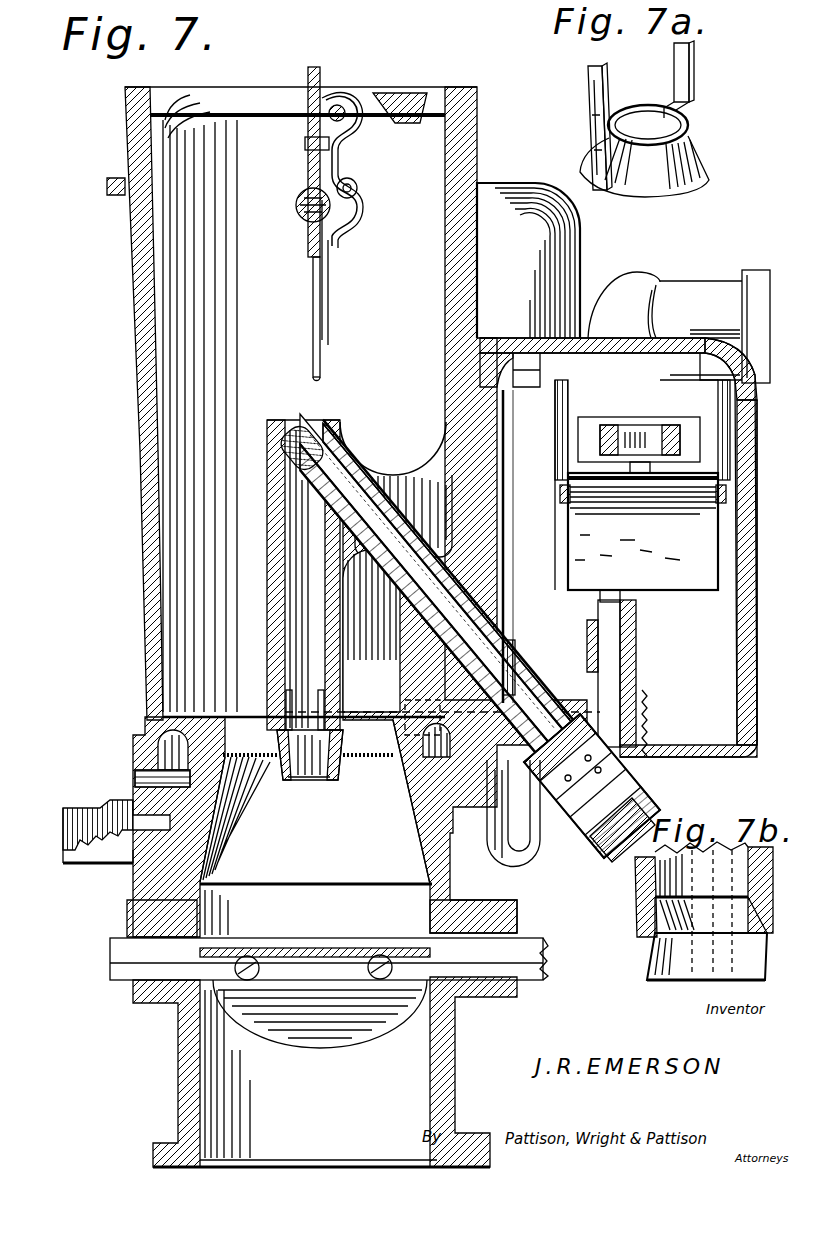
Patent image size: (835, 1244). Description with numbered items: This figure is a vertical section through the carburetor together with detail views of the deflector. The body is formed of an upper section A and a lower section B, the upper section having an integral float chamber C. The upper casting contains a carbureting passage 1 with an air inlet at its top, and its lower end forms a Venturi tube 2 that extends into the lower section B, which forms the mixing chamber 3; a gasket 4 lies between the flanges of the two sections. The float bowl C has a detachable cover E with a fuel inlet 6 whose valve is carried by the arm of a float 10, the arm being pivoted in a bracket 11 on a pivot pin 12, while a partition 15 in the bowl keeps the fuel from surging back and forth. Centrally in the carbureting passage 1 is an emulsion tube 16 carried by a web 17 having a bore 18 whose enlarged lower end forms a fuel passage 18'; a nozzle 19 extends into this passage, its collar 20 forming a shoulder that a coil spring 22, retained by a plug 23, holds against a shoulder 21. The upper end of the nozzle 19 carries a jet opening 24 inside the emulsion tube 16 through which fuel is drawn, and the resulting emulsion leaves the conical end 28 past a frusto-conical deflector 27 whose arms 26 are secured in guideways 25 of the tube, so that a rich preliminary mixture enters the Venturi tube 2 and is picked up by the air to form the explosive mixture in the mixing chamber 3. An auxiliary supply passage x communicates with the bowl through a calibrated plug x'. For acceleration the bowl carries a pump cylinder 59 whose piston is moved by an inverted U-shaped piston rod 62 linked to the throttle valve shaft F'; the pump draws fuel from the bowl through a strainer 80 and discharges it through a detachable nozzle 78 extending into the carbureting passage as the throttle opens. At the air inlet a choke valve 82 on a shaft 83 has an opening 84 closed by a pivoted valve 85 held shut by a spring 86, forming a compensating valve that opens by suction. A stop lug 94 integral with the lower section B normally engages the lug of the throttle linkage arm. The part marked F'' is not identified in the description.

In FIG. 7, the carbureting passage 1 is at (339, 222).
In FIG. 7, the Venturi tube 2 is at (185, 735).
In FIG. 7, the mixing chamber 3 is at (270, 912).
In FIG. 7, the gasket 4 is at (136, 776).
In FIG. 7, the fuel inlet 6 is at (694, 300).
In FIG. 7, the float 10 is at (690, 520).
In FIG. 7, the bracket 11 is at (700, 436).
In FIG. 7, the pivot pin 12 is at (722, 492).
In FIG. 7, the partition 15 is at (660, 692).
In FIG. 7, the emulsion tube 16 is at (268, 600).
In FIG. 7B, the emulsion tube 16 is at (640, 890).
In FIG. 7, the web 17 is at (431, 470).
In FIG. 7, the bore 18 is at (436, 573).
In FIG. 7, the fuel passage 18' is at (596, 852).
In FIG. 7, the nozzle 19 is at (330, 505).
In FIG. 7, the collar 20 is at (440, 790).
In FIG. 7, the shoulder 21 is at (470, 765).
In FIG. 7, the coil spring 22 is at (520, 845).
In FIG. 7, the plug 23 is at (645, 828).
In FIG. 7, the jet opening 24 is at (296, 455).
In FIG. 7, the guideways 25 is at (371, 631).
In FIG. 7, the arms 26 is at (285, 708).
In FIG. 7A, the arms 26 is at (596, 90).
In FIG. 7B, the arms 26 is at (697, 978).
In FIG. 7, the deflector 27 is at (322, 766).
In FIG. 7A, the deflector 27 is at (682, 172).
In FIG. 7B, the deflector 27 is at (650, 972).
In FIG. 7, the conical end 28 is at (310, 748).
In FIG. 7B, the conical end 28 is at (652, 940).
In FIG. 7, the pump cylinder 59 is at (624, 485).
In FIG. 7, the piston rod 62 is at (548, 374).
In FIG. 7, the nozzle 78 is at (393, 448).
In FIG. 7, the strainer 80 is at (512, 630).
In FIG. 7, the choke valve 82 is at (330, 324).
In FIG. 7, the shaft 83 is at (340, 216).
In FIG. 7, the opening 84 is at (310, 286).
In FIG. 7, the pivoted valve 85 is at (324, 275).
In FIG. 7, the spring 86 is at (354, 183).
In FIG. 7, the stop lug 94 is at (100, 830).
In FIG. 7, the upper section A is at (150, 590).
In FIG. 7, the lower section B is at (178, 1047).
In FIG. 7, the float chamber C is at (750, 550).
In FIG. 7, the detachable cover E is at (613, 338).
In FIG. 7, the throttle valve shaft F' is at (320, 1026).
In FIG. 7, the throttle shaft F'' is at (313, 986).
In FIG. 7, the auxiliary supply passage x is at (646, 678).
In FIG. 7, the calibrated plug x' is at (629, 604).